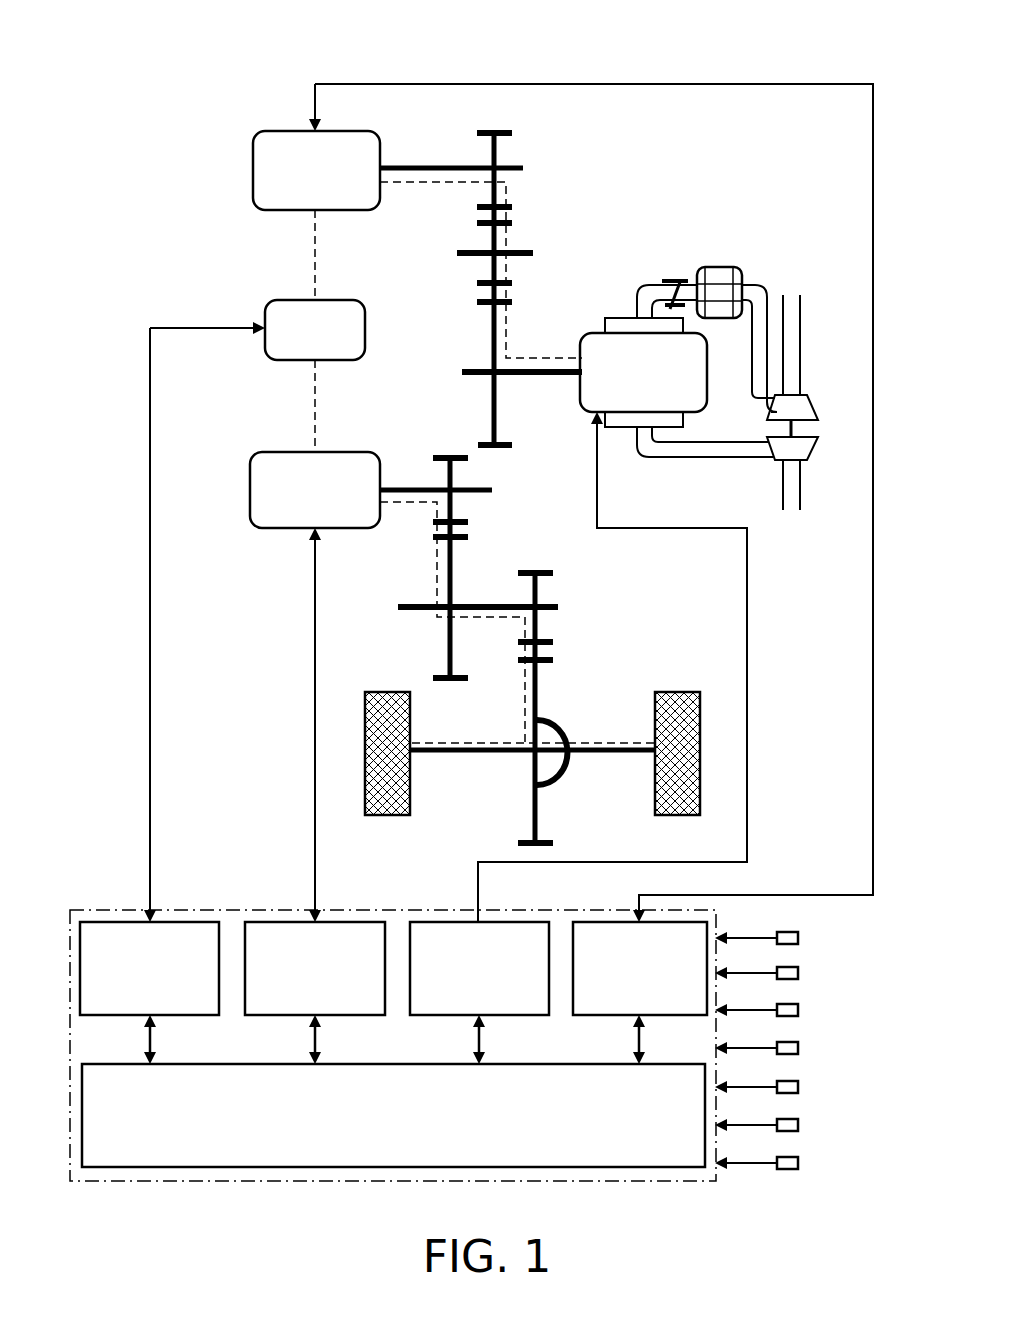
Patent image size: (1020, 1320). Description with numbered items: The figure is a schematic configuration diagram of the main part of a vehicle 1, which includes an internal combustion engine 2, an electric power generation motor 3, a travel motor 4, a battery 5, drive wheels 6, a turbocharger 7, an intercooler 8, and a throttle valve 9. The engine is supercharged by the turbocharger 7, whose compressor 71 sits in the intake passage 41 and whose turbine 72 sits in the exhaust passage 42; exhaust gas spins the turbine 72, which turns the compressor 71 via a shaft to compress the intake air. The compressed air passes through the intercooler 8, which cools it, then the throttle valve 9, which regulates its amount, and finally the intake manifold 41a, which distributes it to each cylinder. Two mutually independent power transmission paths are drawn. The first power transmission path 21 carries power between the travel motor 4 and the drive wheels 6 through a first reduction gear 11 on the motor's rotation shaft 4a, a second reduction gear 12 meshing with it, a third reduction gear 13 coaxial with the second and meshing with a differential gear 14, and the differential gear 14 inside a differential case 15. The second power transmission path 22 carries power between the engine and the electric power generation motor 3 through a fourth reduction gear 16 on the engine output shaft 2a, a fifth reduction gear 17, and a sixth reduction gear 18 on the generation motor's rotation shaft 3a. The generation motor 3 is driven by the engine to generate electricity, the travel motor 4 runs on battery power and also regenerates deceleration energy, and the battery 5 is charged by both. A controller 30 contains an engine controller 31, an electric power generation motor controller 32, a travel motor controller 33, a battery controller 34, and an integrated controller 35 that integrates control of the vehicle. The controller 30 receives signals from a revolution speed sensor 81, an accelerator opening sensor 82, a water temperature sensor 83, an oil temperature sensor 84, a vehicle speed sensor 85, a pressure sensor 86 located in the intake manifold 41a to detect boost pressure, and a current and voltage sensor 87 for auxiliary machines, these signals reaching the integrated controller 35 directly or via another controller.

The vehicle 1 is at (204, 42).
The internal combustion engine 2 is at (597, 331).
The output shaft 2a is at (515, 376).
The electric power generation motor 3 is at (288, 130).
The rotation shaft 3a is at (447, 165).
The travel motor 4 is at (300, 530).
The rotation shaft 4a is at (410, 489).
The battery 5 is at (297, 299).
The drive wheels 6 is at (385, 691).
The turbocharger 7 is at (811, 417).
The intercooler 8 is at (718, 266).
The throttle valve 9 is at (675, 281).
The first reduction gear 11 is at (455, 510).
The second reduction gear 12 is at (455, 565).
The third reduction gear 13 is at (545, 590).
The differential gear 14 is at (540, 699).
The differential case 15 is at (560, 735).
The fourth reduction gear 16 is at (492, 390).
The fifth reduction gear 17 is at (492, 262).
The sixth reduction gear 18 is at (497, 157).
The first power transmission path 21 is at (525, 715).
The second power transmission path 22 is at (506, 238).
The controller 30 is at (222, 910).
The engine controller 31 is at (440, 921).
The electric power generation motor controller 32 is at (603, 921).
The travel motor controller 33 is at (278, 921).
The battery controller 34 is at (112, 921).
The integrated controller 35 is at (391, 1168).
The intake passage 41 is at (800, 312).
The intake manifold 41a is at (628, 318).
The exhaust passage 42 is at (736, 458).
The compressor 71 is at (812, 406).
The turbine 72 is at (817, 450).
The revolution speed sensor 81 is at (798, 938).
The accelerator opening sensor 82 is at (798, 973).
The water temperature sensor 83 is at (798, 1010).
The oil temperature sensor 84 is at (798, 1048).
The vehicle speed sensor 85 is at (798, 1087).
The pressure sensor 86 is at (798, 1125).
The current and voltage sensor 87 is at (798, 1163).